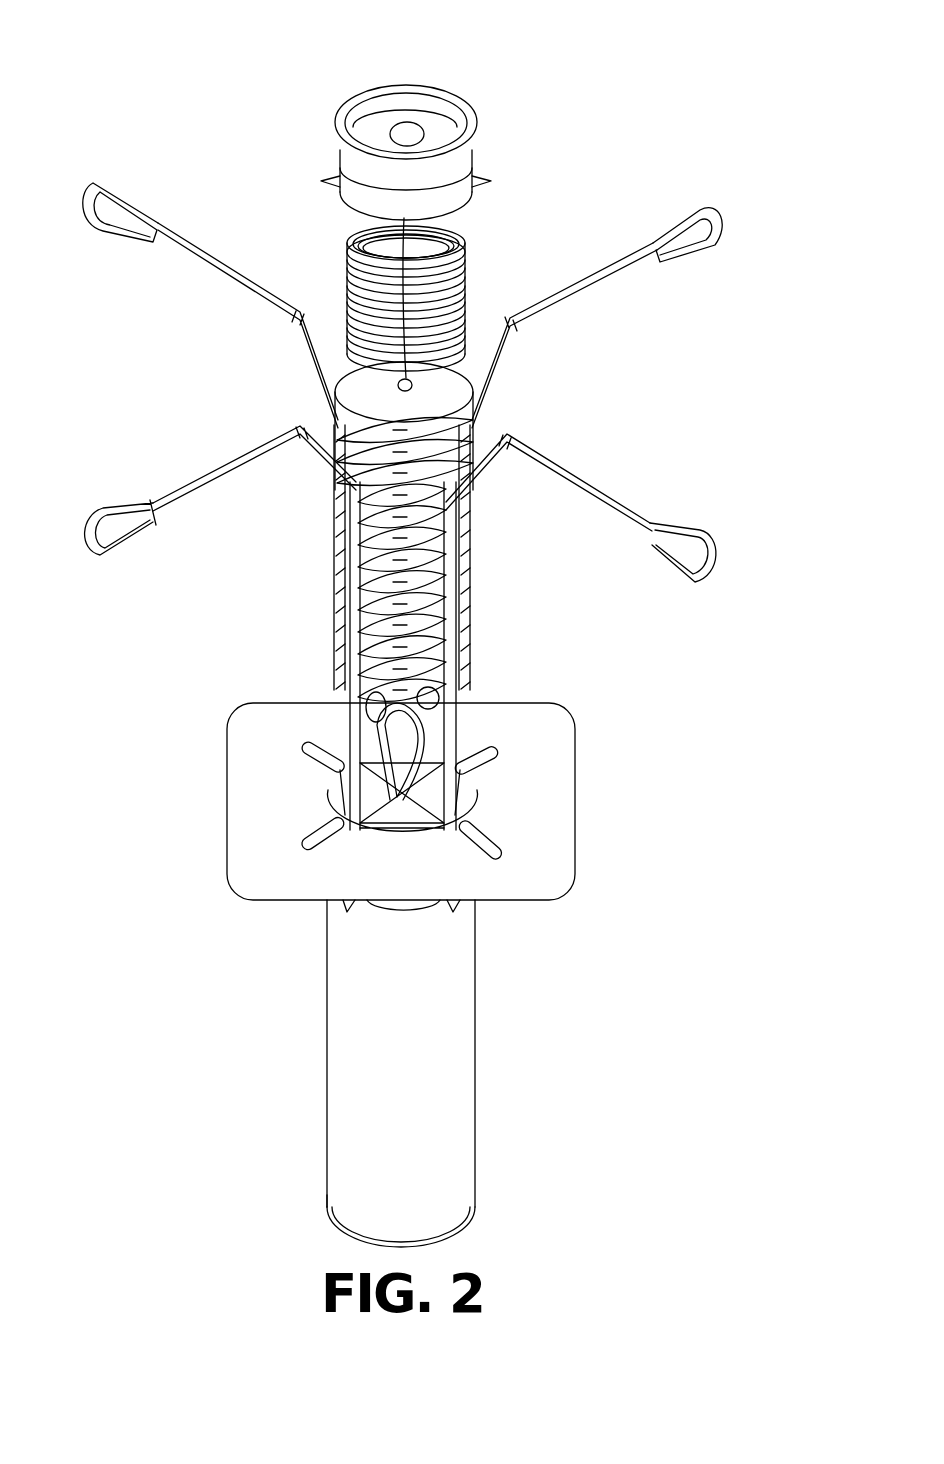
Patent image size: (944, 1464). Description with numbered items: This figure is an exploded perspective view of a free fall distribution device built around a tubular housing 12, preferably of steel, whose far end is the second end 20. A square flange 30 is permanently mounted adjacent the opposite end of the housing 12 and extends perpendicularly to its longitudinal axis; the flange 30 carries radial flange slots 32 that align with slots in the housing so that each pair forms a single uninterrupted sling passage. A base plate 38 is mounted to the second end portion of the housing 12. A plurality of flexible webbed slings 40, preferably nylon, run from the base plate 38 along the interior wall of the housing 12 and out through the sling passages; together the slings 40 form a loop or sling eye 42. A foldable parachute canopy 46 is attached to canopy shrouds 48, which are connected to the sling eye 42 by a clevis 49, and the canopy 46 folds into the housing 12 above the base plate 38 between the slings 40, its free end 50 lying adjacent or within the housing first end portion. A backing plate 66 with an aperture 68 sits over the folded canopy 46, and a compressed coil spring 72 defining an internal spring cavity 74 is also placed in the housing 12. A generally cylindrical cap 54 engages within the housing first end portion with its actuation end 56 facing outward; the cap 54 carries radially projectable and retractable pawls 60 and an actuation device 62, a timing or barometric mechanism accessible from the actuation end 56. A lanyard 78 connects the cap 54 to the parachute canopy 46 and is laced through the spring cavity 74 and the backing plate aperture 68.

The tubular housing 12 is at (452, 1046).
The second end 20 is at (325, 1185).
The flange 30 is at (552, 883).
The flange slots 32 is at (335, 822).
The base plate 38 is at (476, 1205).
The slings 40 is at (718, 577).
The sling eye 42 is at (385, 760).
The parachute canopy 46 is at (476, 533).
The canopy shrouds 48 is at (366, 697).
The clevis 49 is at (439, 700).
The free end of the folded parachute 50 is at (346, 396).
The cap 54 is at (478, 145).
The actuation end 56 is at (336, 122).
The pawls 60 is at (490, 181).
The actuation device 62 is at (407, 133).
The backing plate 66 is at (445, 398).
The aperture 68 is at (412, 385).
The spring 72 is at (468, 283).
The spring cavity 74 is at (462, 242).
The lanyard 78 is at (356, 250).